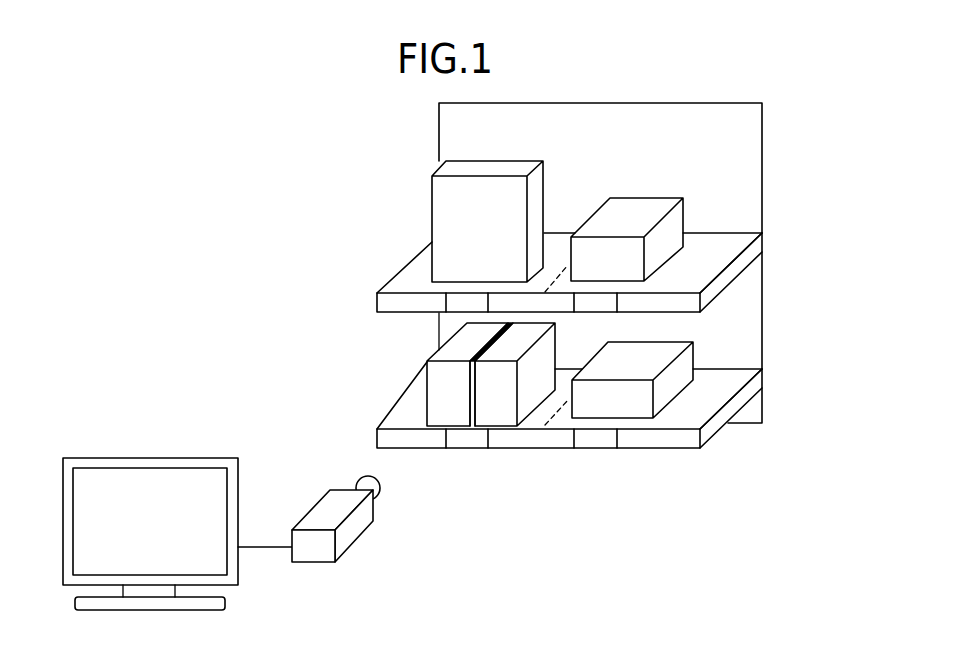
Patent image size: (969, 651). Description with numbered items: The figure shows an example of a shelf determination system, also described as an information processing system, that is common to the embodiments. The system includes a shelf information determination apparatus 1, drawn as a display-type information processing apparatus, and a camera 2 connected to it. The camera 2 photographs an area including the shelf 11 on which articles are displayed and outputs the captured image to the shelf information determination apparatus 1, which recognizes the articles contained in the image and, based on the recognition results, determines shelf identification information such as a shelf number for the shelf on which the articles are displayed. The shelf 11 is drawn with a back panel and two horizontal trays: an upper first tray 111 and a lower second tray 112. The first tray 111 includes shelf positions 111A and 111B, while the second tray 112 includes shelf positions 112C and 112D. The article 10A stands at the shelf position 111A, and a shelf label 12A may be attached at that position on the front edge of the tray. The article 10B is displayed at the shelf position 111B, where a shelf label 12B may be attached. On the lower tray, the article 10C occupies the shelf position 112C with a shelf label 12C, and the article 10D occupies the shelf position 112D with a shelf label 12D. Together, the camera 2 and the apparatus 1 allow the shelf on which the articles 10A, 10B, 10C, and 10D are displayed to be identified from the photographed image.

The shelf information determination apparatus 1 is at (89, 457).
The camera 2 is at (317, 566).
The shelf 11 is at (762, 130).
The first tray 111 is at (732, 272).
The second tray 112 is at (718, 433).
The shelf position 111A is at (407, 283).
The shelf position 111B is at (716, 259).
The shelf position 112C is at (407, 417).
The shelf position 112D is at (713, 393).
The article 10A is at (453, 210).
The article 10B is at (685, 218).
The article 10C is at (485, 373).
The article 10D is at (638, 410).
The shelf label 12A is at (457, 310).
The shelf label 12B is at (597, 309).
The shelf label 12C is at (462, 442).
The shelf label 12D is at (593, 442).